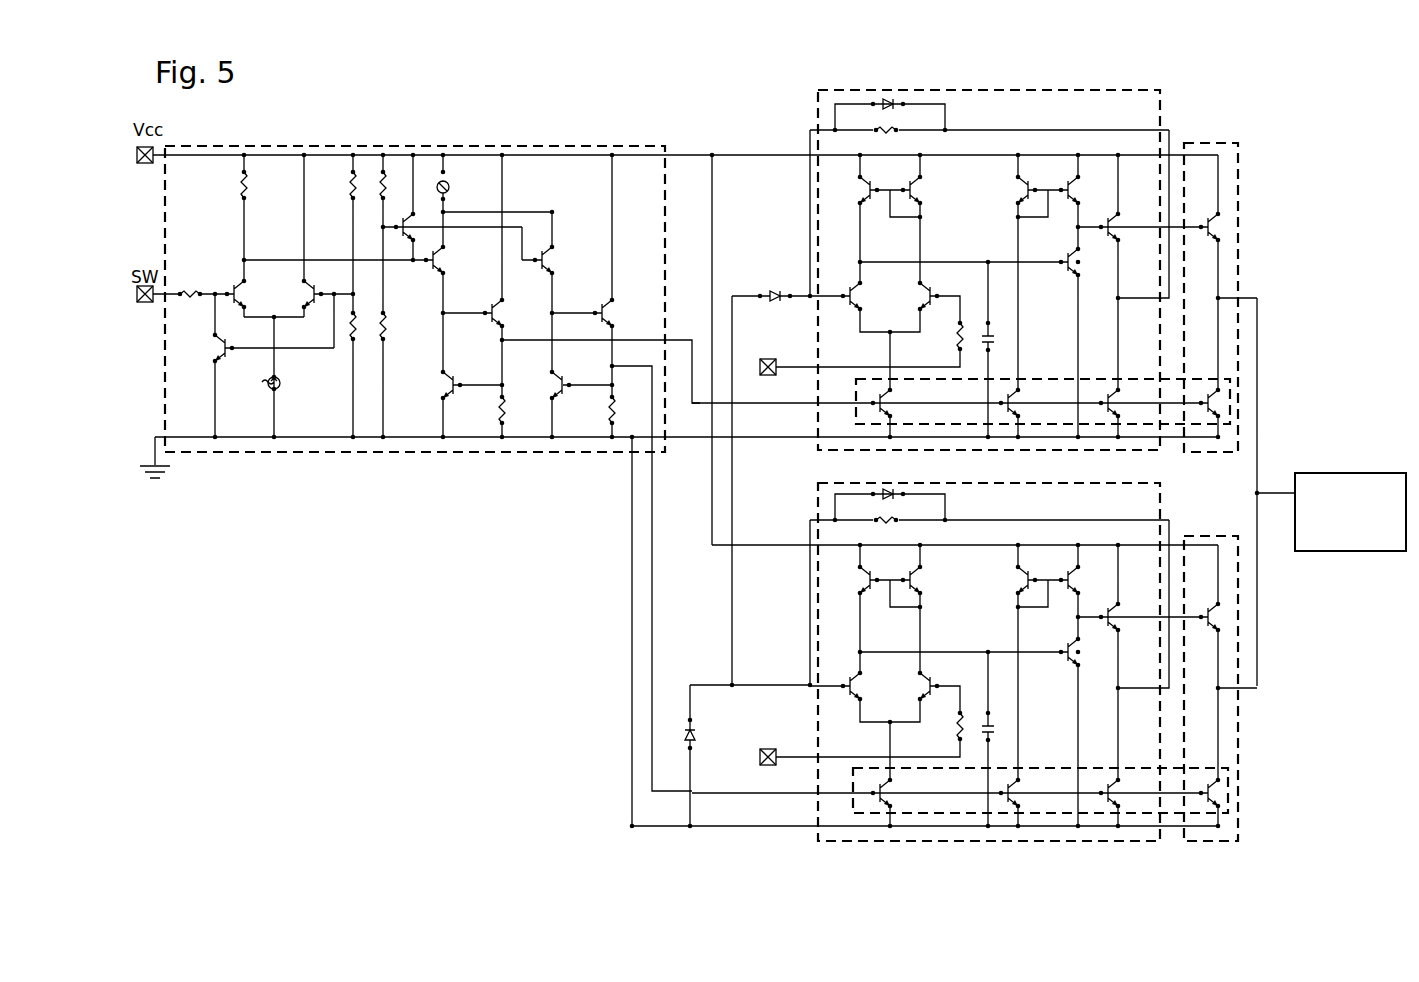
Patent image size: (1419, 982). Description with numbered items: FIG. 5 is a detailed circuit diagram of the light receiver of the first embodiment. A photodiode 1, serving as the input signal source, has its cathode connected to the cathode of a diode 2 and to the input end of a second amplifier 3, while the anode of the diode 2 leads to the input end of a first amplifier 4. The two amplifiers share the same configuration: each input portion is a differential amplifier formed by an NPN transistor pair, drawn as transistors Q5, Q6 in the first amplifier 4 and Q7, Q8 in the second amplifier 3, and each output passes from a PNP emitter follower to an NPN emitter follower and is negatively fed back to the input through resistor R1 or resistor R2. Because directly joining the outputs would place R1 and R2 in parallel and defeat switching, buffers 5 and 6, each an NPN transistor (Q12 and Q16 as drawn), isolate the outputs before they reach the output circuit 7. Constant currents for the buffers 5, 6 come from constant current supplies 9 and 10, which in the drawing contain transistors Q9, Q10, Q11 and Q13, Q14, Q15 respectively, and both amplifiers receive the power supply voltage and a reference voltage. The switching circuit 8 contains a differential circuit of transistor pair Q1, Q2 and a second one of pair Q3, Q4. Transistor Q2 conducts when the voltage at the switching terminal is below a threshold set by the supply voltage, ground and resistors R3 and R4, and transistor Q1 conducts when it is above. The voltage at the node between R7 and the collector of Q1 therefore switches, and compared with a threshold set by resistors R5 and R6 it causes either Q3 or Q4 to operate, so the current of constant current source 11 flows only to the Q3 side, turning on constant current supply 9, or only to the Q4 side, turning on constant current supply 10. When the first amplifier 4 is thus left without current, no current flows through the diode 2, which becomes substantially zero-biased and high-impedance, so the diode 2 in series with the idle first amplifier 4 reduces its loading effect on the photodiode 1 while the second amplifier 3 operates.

The photodiode 1 is at (678, 738).
The diode 2 is at (760, 293).
The second amplifier 3 is at (962, 687).
The first amplifier 4 is at (974, 263).
The buffer 5 is at (1245, 279).
The buffer 6 is at (1245, 688).
The output circuit 7 is at (1353, 472).
The switching circuit 8 is at (409, 324).
The constant current supply 9 is at (981, 430).
The constant current supply 10 is at (948, 829).
The constant current source 11 is at (447, 188).
The resistor R1 is at (989, 116).
The resistor R2 is at (989, 506).
The resistor R3 is at (339, 179).
The resistor R4 is at (350, 346).
The resistor R5 is at (388, 168).
The resistor R6 is at (398, 326).
The resistor R7 is at (227, 179).
The transistor Q1 is at (227, 289).
The transistor Q2 is at (318, 289).
The transistor Q3 is at (449, 260).
The transistor Q4 is at (558, 260).
The transistor Q5 is at (844, 292).
The transistor Q6 is at (935, 292).
The transistor Q7 is at (844, 682).
The transistor Q8 is at (935, 682).
The transistor Q9 is at (899, 410).
The transistor Q10 is at (1031, 410).
The transistor Q11 is at (1127, 410).
The transistor Q12 is at (1228, 397).
The transistor Q13 is at (904, 799).
The transistor Q14 is at (1031, 799).
The transistor Q15 is at (1127, 799).
The transistor Q16 is at (1253, 795).